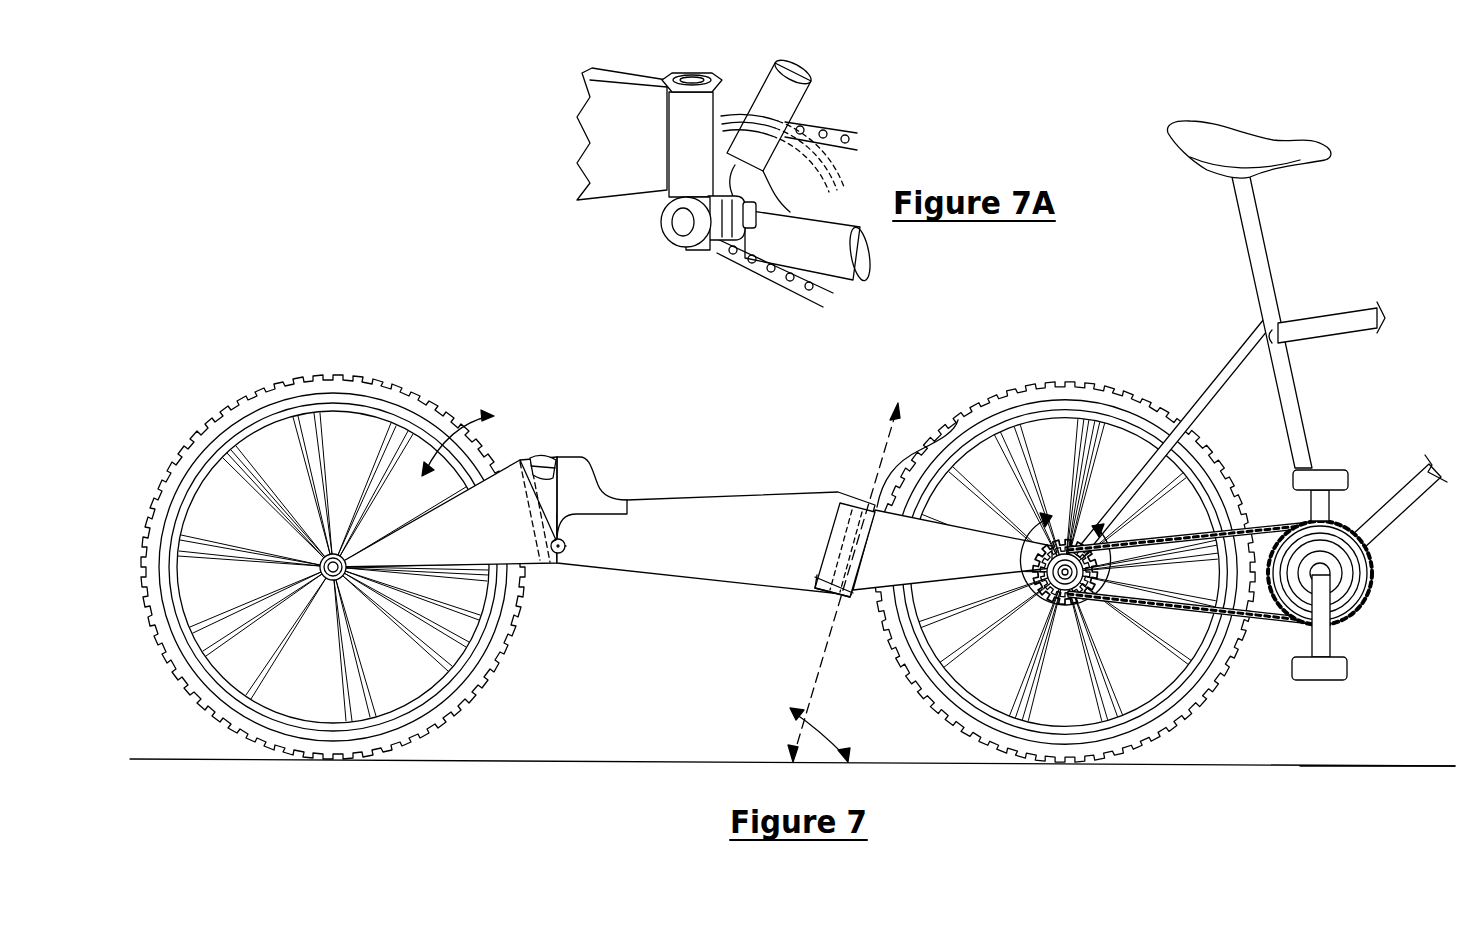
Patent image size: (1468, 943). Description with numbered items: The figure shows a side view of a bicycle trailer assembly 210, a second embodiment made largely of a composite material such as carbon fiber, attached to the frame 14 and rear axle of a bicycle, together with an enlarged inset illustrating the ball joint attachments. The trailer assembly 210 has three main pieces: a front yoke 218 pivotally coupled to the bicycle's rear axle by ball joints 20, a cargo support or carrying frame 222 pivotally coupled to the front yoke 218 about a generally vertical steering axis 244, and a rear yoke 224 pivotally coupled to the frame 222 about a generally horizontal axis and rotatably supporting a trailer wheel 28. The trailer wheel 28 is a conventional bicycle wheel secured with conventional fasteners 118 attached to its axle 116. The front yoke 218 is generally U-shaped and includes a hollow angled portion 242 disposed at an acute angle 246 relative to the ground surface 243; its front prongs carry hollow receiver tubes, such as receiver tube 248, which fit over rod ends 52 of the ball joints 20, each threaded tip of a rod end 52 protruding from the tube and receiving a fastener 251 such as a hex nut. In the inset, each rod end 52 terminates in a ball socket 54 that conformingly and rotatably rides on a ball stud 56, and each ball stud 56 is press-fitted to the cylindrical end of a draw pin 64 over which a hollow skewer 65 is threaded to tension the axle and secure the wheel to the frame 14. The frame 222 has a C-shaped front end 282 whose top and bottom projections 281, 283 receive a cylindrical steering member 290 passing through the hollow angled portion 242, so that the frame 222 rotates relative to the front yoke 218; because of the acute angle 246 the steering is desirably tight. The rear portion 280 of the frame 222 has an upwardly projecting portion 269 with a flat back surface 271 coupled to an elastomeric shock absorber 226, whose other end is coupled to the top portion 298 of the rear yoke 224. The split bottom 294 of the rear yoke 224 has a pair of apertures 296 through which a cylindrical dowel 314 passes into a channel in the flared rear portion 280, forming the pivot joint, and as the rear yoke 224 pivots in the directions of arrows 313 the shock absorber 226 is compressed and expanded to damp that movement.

In FIG. 7, the trailer assembly 210 is at (440, 293).
In FIG. 7, the trailer wheel 28 is at (310, 385).
In FIG. 7, the fasteners 118 is at (330, 570).
In FIG. 7, the axle 116 is at (335, 585).
In FIG. 7, the rear yoke 224 is at (488, 540).
In FIG. 7, the arrows 313 is at (455, 410).
In FIG. 7, the top portion 298 is at (520, 457).
In FIG. 7, the shock absorber 226 is at (537, 456).
In FIG. 7, the flat back surface 271 is at (539, 466).
In FIG. 7, the upwardly projecting portion 269 is at (560, 458).
In FIG. 7, the rear end 280 is at (586, 490).
In FIG. 7, the dowel 314 is at (620, 514).
In FIG. 7, the bottom 294 is at (553, 557).
In FIG. 7, the apertures 296 is at (572, 548).
In FIG. 7, the carrying frame 222 is at (700, 515).
In FIG. 7, the hollow angled portion 242 is at (845, 547).
In FIG. 7, the front end 282 is at (858, 500).
In FIG. 7, the steering axis 244 is at (880, 460).
In FIG. 7, the steering member 290 is at (818, 590).
In FIG. 7, the bottom projection 283 is at (812, 593).
In FIG. 7, the acute angle 246 is at (843, 727).
In FIG. 7, the front yoke 218 is at (933, 567).
In FIG. 7A, the front yoke 218 is at (607, 157).
In FIG. 7, the top projection 281 is at (958, 420).
In FIG. 7, the frame 14 is at (1218, 357).
In FIG. 7, the ball joints 20 is at (1066, 598).
In FIG. 7A, the ball joints 20 is at (701, 165).
In FIG. 7, the ground surface 243 is at (1310, 762).
In FIG. 7A, the receiver tube 248 is at (677, 107).
In FIG. 7A, the rod ends 52 is at (690, 74).
In FIG. 7A, the fastener 251 is at (712, 77).
In FIG. 7A, the draw pin 64 is at (681, 225).
In FIG. 7A, the ball studs 56 is at (692, 247).
In FIG. 7A, the ball sockets 54 is at (703, 252).
In FIG. 7A, the hollow skewer 65 is at (783, 197).